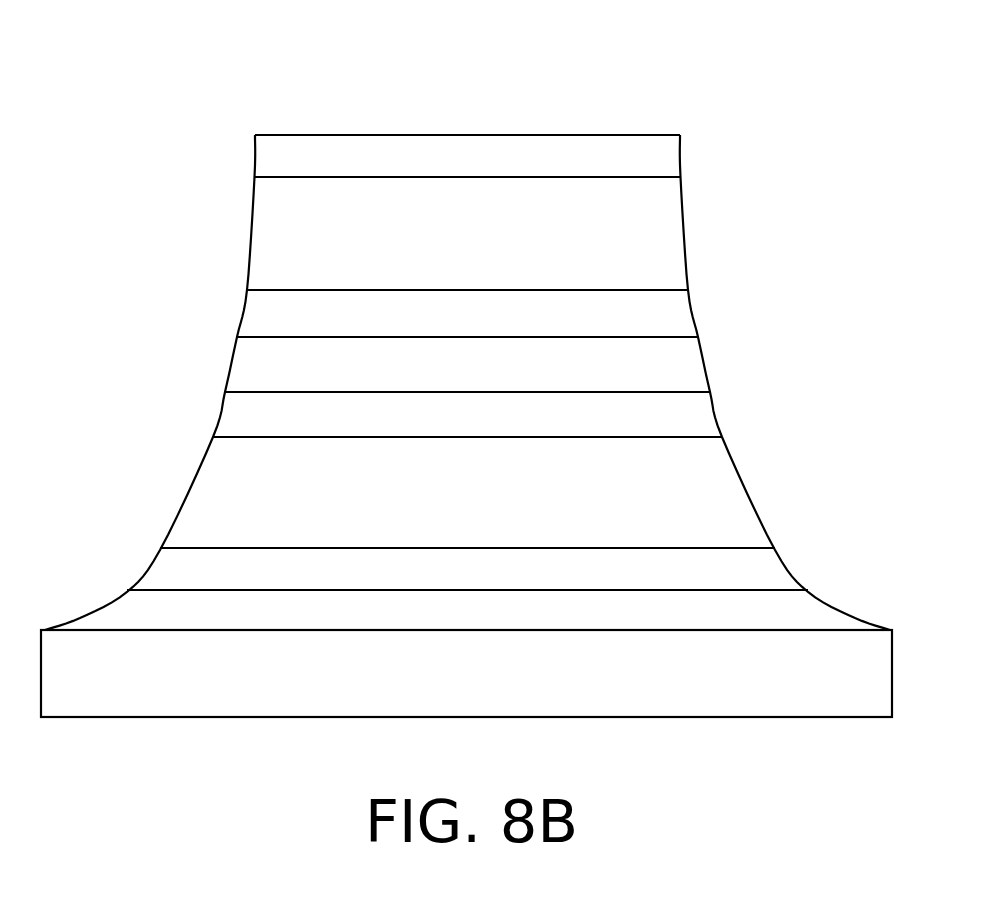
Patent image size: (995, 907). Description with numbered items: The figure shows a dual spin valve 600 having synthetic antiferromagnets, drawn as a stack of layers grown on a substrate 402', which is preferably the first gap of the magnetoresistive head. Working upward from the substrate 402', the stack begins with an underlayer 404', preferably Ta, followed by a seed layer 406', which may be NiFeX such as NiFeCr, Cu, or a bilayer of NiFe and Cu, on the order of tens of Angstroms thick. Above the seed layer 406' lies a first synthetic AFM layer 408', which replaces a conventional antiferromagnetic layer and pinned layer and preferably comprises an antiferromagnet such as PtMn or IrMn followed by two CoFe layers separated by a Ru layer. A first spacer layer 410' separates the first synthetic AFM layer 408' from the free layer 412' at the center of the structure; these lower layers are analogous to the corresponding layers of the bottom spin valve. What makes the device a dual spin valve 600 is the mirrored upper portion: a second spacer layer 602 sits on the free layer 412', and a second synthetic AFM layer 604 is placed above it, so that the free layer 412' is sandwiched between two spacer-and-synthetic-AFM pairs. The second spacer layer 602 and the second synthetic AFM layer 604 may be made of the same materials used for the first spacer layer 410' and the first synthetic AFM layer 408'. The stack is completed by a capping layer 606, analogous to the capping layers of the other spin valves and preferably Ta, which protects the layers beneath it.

The dual spin valve 600 is at (490, 52).
The capping layer 606 is at (670, 158).
The second synthetic AFM layer 604 is at (262, 236).
The second spacer layer 602 is at (687, 315).
The free layer 412' is at (415, 360).
The first spacer layer 410' is at (518, 409).
The first synthetic AFM layer 408' is at (427, 492).
The seed layer 406' is at (510, 563).
The underlayer 404' is at (467, 583).
The substrate 402' is at (466, 706).